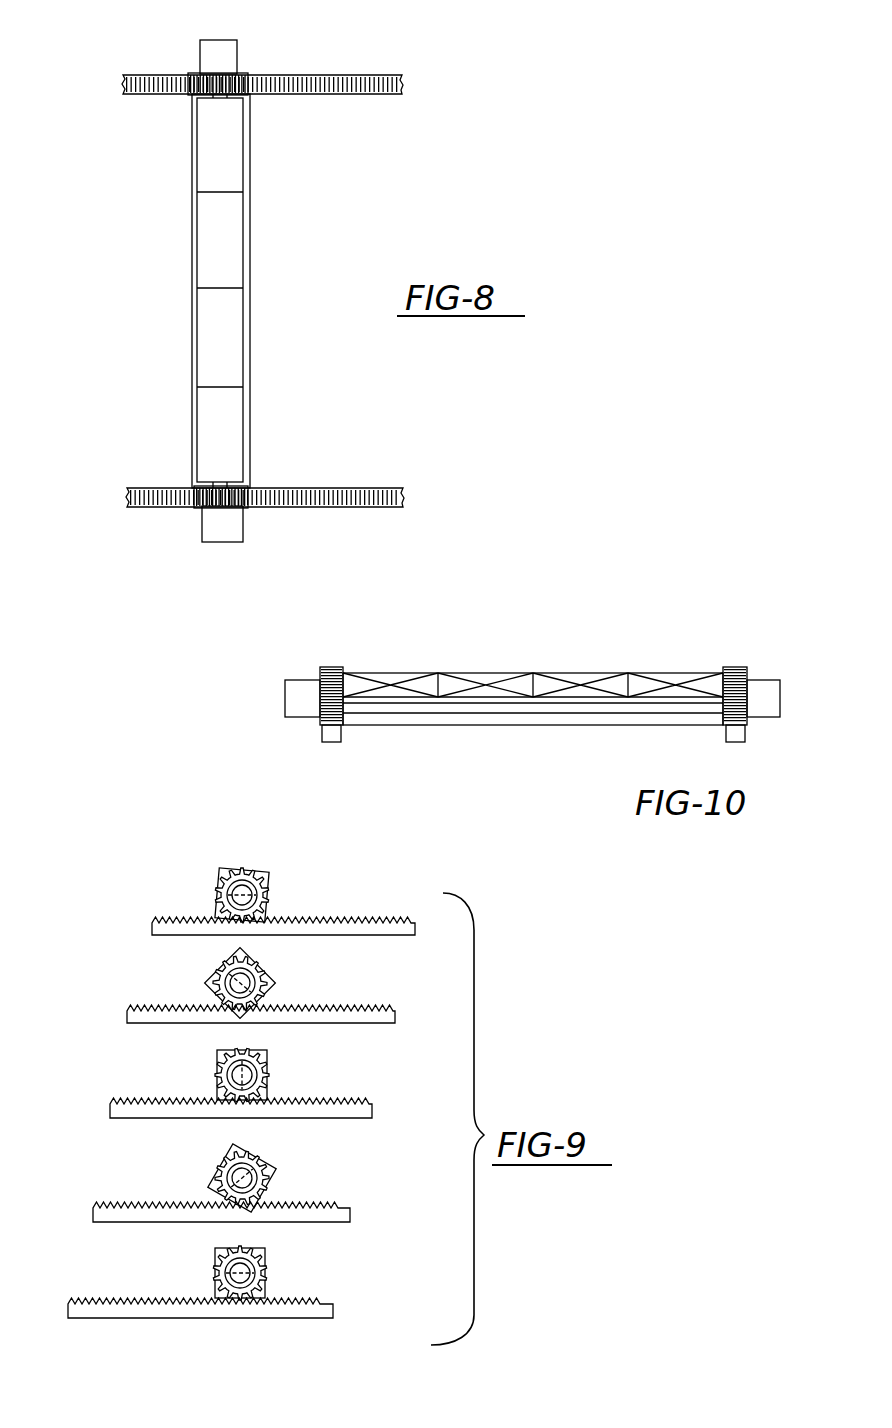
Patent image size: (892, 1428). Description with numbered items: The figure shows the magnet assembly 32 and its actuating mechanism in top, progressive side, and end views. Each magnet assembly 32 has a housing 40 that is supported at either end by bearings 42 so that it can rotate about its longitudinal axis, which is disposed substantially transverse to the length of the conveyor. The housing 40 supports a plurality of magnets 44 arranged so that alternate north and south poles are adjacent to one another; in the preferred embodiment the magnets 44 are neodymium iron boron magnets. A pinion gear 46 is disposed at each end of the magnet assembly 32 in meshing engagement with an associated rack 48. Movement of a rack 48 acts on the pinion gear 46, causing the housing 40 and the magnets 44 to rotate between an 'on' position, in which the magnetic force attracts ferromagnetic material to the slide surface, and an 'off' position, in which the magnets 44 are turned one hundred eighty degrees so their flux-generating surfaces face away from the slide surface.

In FIG. 8, the magnet assembly 32 is at (128, 206).
In FIG. 10, the magnet assembly 32 is at (645, 638).
In FIG. 8, the housing 40 is at (250, 296).
In FIG. 8, the bearing 42 is at (232, 52).
In FIG. 10, the bearing 42 is at (767, 683).
In FIG. 8, the magnet 44 is at (200, 265).
In FIG. 10, the magnet 44 is at (502, 693).
In FIG. 9, the magnet 44 is at (262, 874).
In FIG. 8, the pinion gear 46 is at (246, 498).
In FIG. 10, the pinion gear 46 is at (733, 667).
In FIG. 9, the pinion gear 46 is at (263, 905).
In FIG. 8, the rack 48 is at (367, 94).
In FIG. 9, the rack 48 is at (352, 918).